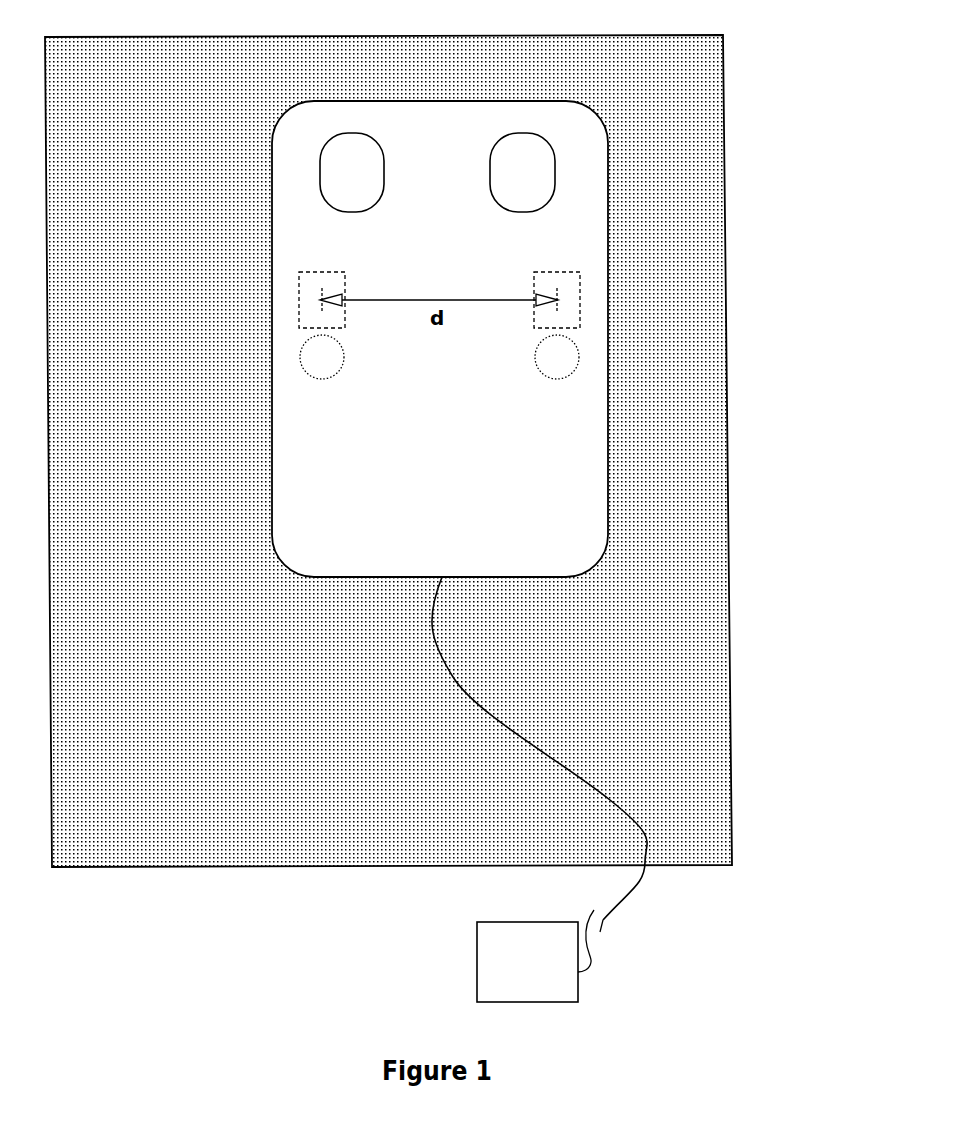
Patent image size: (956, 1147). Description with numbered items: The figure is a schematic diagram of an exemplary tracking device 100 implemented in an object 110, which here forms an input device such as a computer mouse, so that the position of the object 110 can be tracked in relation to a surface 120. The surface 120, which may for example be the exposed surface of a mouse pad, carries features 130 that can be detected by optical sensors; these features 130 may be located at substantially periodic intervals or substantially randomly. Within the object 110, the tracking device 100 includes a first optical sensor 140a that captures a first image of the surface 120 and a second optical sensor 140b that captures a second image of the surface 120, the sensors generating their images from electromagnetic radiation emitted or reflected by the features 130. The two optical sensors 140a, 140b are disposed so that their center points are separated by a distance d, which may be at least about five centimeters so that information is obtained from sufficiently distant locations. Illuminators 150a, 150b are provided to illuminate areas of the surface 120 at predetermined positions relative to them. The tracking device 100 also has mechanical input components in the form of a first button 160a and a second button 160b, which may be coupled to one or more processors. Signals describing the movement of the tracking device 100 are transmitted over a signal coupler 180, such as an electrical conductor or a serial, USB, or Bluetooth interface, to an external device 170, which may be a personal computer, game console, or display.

The tracking device 100 is at (578, 226).
The object 110 is at (600, 562).
The surface 120 is at (259, 868).
The features 130 is at (149, 815).
The first optical sensor 140a is at (322, 271).
The second optical sensor 140b is at (560, 272).
The illuminator 150a is at (318, 380).
The illuminator 150b is at (562, 378).
The first button 160a is at (352, 133).
The second button 160b is at (520, 134).
The external device 170 is at (513, 994).
The signal coupler 180 is at (646, 866).